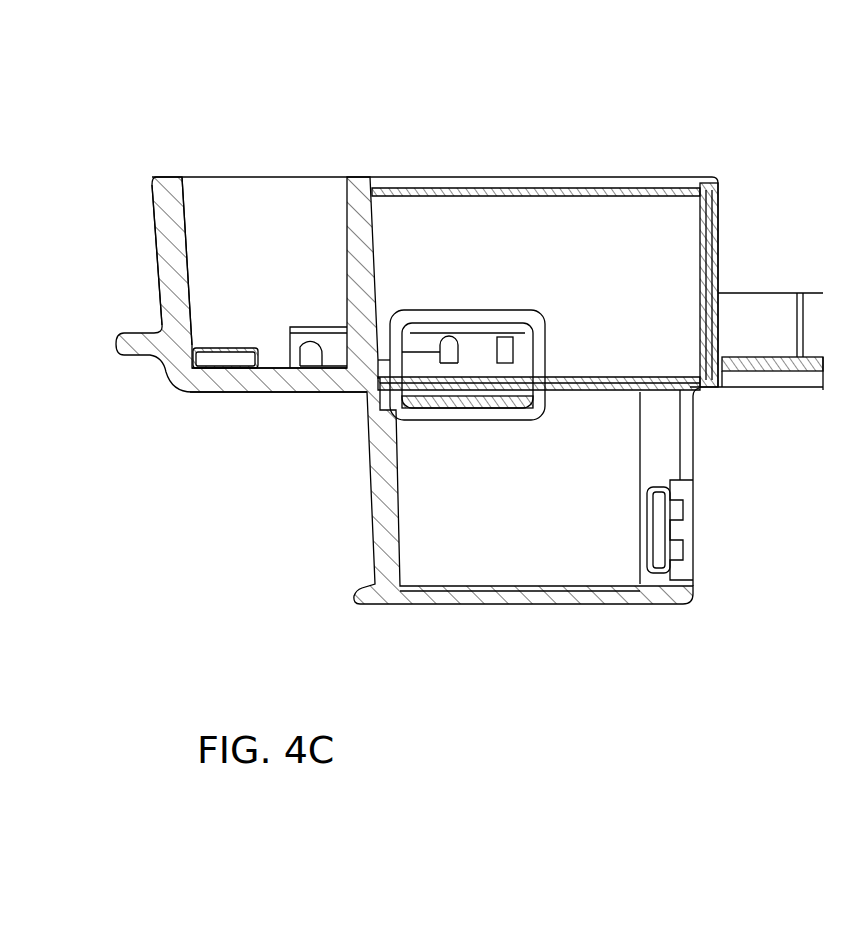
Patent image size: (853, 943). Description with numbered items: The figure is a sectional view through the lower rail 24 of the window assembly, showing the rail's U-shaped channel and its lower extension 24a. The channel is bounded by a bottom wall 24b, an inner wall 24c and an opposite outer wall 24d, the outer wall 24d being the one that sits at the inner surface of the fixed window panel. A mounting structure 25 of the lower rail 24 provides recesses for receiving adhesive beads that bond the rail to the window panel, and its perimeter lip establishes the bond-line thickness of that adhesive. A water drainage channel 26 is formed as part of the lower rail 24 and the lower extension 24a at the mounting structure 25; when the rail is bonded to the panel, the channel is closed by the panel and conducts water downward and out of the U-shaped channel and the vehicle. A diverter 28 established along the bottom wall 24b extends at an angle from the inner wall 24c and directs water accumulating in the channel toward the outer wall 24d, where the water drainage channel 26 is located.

The lower rail 24 is at (423, 364).
The lower extension 24a is at (510, 550).
The bottom wall 24b is at (273, 382).
The inner wall 24c is at (173, 273).
The outer wall 24d is at (663, 230).
The mounting structure 25 is at (500, 207).
The water drainage channel 26 is at (448, 388).
The diverter 28 is at (212, 358).